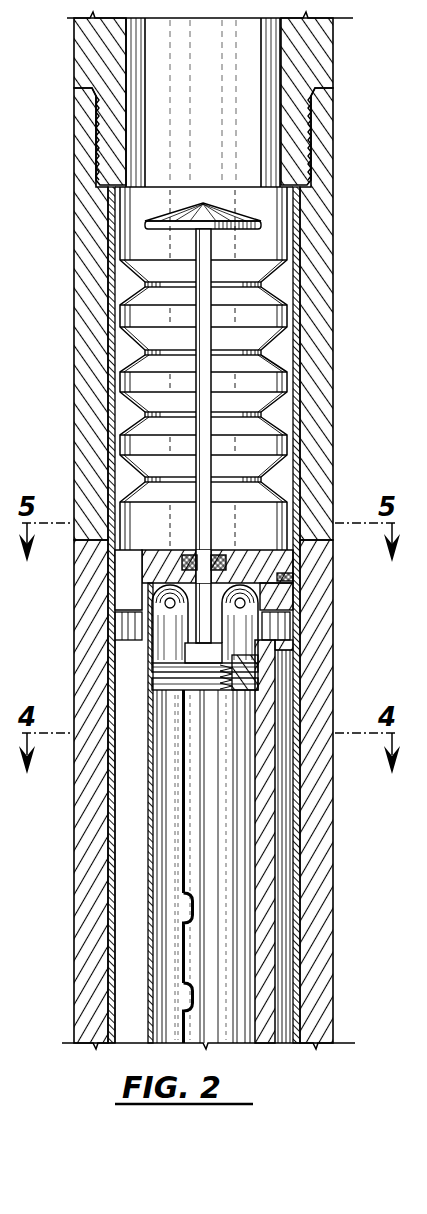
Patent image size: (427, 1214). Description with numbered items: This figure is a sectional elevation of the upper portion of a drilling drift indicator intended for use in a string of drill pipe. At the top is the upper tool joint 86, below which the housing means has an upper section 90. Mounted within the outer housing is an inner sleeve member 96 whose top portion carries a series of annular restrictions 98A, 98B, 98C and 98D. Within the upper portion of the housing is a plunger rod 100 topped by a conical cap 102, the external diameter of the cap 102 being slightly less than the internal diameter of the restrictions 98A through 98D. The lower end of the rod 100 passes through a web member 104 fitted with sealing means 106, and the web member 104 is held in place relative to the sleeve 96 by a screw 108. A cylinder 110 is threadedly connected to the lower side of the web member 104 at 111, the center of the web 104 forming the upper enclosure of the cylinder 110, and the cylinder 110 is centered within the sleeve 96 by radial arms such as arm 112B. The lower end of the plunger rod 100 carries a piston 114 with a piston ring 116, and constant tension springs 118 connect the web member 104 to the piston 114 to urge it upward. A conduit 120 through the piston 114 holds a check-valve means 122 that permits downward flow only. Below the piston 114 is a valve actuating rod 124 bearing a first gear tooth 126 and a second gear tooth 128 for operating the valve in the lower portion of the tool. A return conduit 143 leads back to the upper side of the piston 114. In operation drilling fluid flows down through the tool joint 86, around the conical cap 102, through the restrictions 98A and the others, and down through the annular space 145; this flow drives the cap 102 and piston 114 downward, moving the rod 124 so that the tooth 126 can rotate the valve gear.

The upper tool joint 86 is at (334, 56).
The upper section of housing means 90 is at (334, 301).
The inner sleeve member 96 is at (296, 430).
The annular restriction 98A is at (187, 293).
The annular restriction 98B is at (188, 357).
The annular restriction 98C is at (188, 421).
The annular restriction 98D is at (188, 485).
The plunger rod 100 is at (213, 294).
The conical cap 102 is at (206, 215).
The web member 104 is at (235, 556).
The sealing means 106 is at (189, 556).
The screw 108 is at (296, 579).
The cylinder 110 is at (149, 834).
The threaded connection 111 is at (145, 598).
The radial arm 112B is at (266, 771).
The piston 114 is at (165, 667).
The piston ring 116 is at (167, 683).
The constant tension springs 118 is at (183, 632).
The conduit 120 is at (220, 686).
The check-valve means 122 is at (231, 691).
The valve actuating rod 124 is at (185, 800).
The first valve actuating gear tooth 126 is at (197, 990).
The second valve actuating gear tooth 128 is at (197, 923).
The return conduit 143 is at (283, 997).
The annular space 145 is at (143, 864).